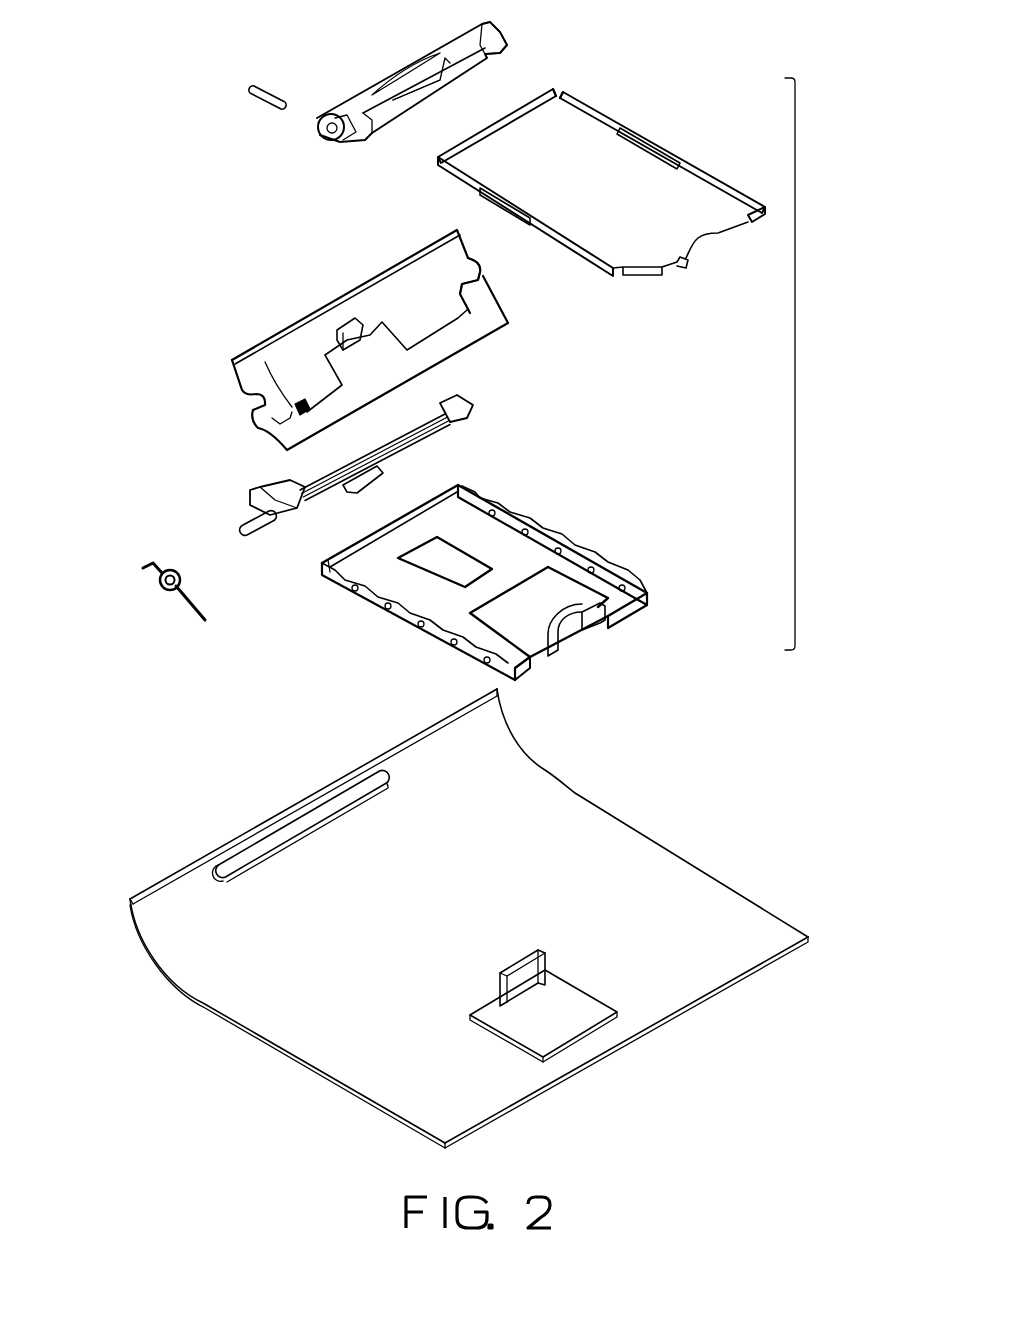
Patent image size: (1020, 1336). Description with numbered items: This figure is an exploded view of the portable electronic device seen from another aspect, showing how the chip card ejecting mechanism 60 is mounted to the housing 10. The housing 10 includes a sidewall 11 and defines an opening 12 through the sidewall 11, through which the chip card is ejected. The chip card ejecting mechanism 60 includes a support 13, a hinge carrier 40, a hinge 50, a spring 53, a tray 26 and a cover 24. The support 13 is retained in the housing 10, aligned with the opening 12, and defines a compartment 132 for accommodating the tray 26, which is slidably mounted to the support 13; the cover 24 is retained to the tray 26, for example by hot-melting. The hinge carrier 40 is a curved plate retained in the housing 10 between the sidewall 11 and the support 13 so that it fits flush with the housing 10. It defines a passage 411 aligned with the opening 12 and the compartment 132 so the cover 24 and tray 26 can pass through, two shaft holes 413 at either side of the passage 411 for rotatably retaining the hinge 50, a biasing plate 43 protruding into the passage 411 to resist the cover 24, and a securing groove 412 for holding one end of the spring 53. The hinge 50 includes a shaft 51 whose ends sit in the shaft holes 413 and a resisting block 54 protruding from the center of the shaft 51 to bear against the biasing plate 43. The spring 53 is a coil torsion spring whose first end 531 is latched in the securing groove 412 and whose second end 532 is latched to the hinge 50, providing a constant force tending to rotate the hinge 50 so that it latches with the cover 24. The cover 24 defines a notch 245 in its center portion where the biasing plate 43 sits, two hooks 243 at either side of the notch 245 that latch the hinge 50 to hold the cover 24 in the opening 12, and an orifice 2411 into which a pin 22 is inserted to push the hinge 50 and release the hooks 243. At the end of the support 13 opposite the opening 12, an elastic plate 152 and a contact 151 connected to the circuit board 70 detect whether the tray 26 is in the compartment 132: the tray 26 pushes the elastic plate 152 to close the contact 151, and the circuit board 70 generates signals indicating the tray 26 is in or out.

The housing 10 is at (457, 918).
The sidewall 11 is at (417, 747).
The opening 12 is at (300, 823).
The support 13 is at (510, 582).
The compartment 132 is at (530, 557).
The elastic plate 152 is at (573, 627).
The contact 151 is at (522, 985).
The circuit board 70 is at (606, 1036).
The pin 22 is at (270, 98).
The cover 24 is at (429, 110).
The hooks 243 is at (508, 38).
The notch 245 is at (407, 102).
The orifice 2411 is at (337, 137).
The tray 26 is at (587, 143).
The hinge carrier 40 is at (356, 331).
The passage 411 is at (403, 290).
The securing groove 412 is at (299, 404).
The shaft holes 413 is at (481, 272).
The biasing plate 43 is at (347, 323).
The hinge 50 is at (309, 469).
The shaft 51 is at (327, 497).
The resisting block 54 is at (375, 473).
The spring 53 is at (167, 576).
The first end 531 is at (195, 607).
The second end 532 is at (145, 567).
The chip card ejecting mechanism 60 is at (816, 364).